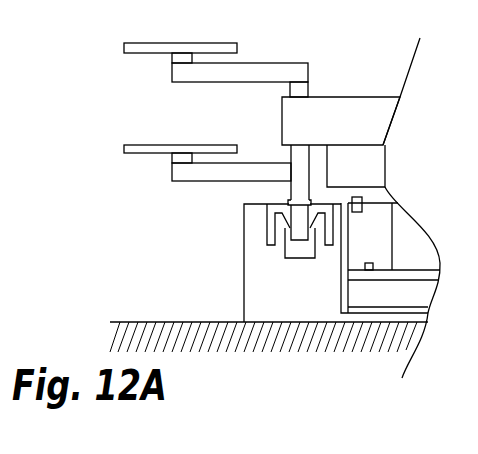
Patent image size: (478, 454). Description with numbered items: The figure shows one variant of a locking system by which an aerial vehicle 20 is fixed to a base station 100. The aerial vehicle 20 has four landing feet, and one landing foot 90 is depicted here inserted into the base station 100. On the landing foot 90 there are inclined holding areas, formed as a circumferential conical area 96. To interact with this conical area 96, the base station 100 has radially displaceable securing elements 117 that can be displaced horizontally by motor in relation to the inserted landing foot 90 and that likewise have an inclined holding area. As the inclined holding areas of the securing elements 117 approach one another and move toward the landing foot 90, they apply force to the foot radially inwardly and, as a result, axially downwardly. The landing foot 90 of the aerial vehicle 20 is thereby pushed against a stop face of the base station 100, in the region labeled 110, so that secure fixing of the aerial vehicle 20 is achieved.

The aerial vehicle 20 is at (355, 79).
The landing foot 90 is at (290, 186).
The circumferential conical area 96 is at (288, 202).
The base station 100 is at (227, 214).
The securing element 117 is at (267, 235).
The socket well 110 is at (299, 261).